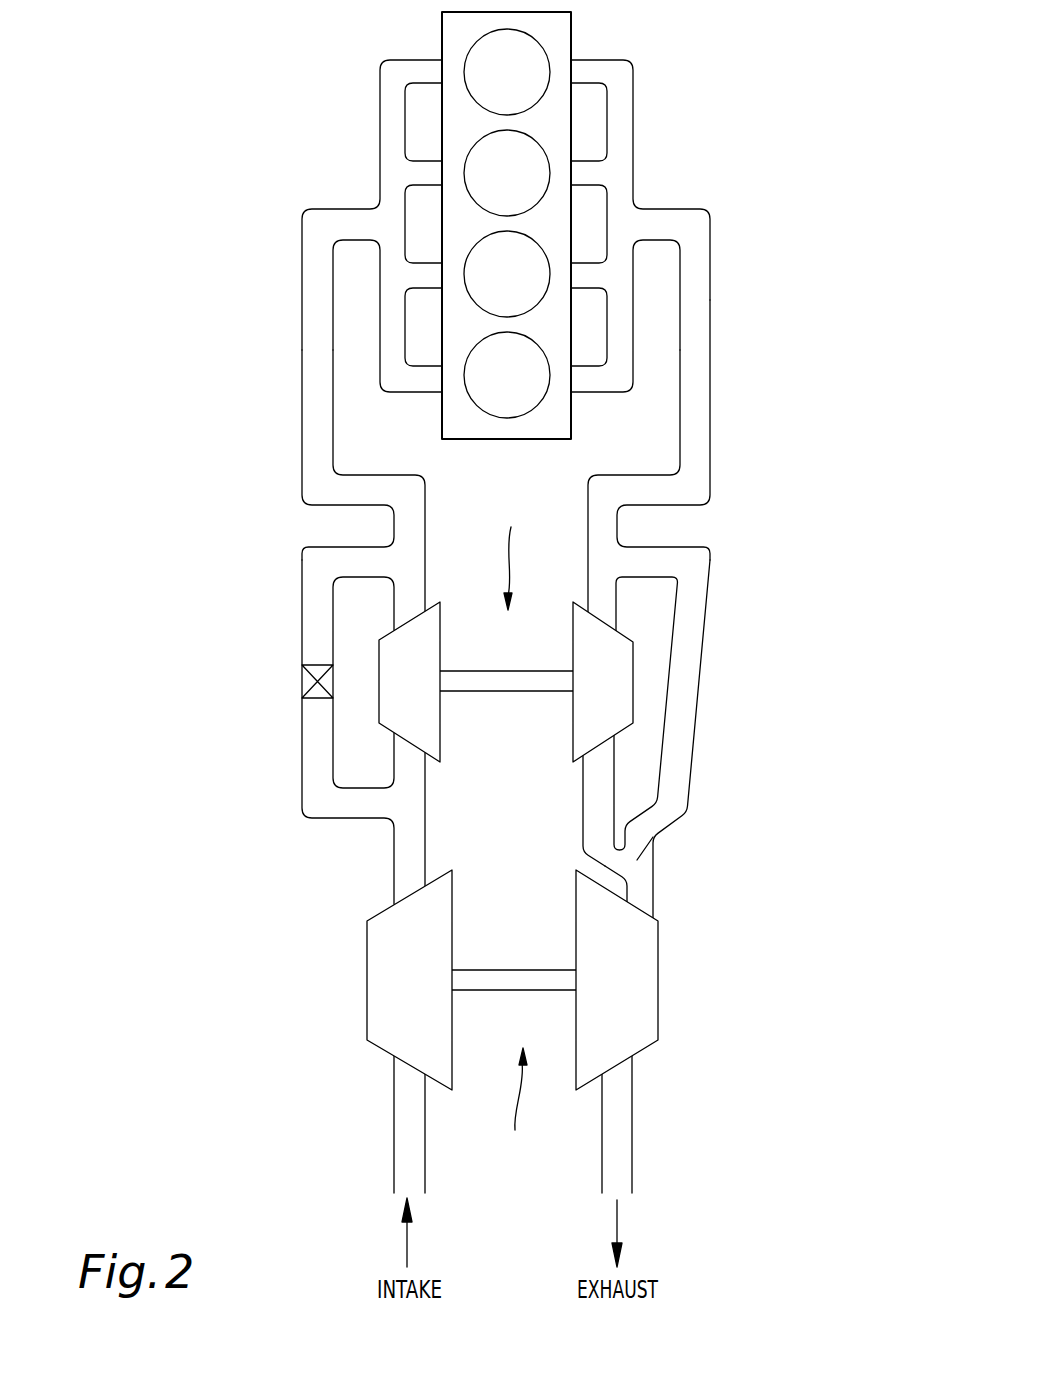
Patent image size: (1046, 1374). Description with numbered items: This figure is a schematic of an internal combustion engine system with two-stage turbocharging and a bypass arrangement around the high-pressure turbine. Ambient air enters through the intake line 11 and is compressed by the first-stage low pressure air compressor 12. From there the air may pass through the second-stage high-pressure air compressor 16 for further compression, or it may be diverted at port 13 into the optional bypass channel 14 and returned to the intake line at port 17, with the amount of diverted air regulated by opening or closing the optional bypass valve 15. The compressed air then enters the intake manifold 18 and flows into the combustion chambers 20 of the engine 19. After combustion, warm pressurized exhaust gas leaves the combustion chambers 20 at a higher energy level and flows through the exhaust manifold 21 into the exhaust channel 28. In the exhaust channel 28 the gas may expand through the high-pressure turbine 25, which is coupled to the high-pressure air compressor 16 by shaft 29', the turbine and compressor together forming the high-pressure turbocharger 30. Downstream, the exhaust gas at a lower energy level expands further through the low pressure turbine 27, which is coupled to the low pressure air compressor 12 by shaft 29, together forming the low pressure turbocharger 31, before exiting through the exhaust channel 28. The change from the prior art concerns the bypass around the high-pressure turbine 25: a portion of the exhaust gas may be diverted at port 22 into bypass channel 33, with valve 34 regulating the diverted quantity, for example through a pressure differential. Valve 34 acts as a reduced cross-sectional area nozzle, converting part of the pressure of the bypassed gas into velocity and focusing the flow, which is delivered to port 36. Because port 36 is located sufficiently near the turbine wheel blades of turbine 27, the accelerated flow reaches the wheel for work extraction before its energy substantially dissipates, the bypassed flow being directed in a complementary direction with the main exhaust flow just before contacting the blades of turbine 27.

The intake line 11 is at (400, 1122).
The first-stage low pressure air compressor 12 is at (380, 978).
The port 13 is at (392, 803).
The bypass channel 14 is at (312, 790).
The bypass valve 15 is at (305, 682).
The second-stage high-pressure air compressor 16 is at (422, 696).
The port 17 is at (393, 563).
The intake manifold 18 is at (388, 223).
The engine 19 is at (558, 27).
The combustion chambers 20 is at (520, 85).
The exhaust manifold 21 is at (623, 223).
The port 22 is at (623, 563).
The high-pressure turbine 25 is at (616, 696).
The low pressure turbine 27 is at (647, 990).
The exhaust channel 28 is at (695, 380).
The shaft 29 is at (514, 934).
The shaft 29' is at (506, 726).
The high-pressure turbocharger 30 is at (514, 555).
The low pressure turbocharger 31 is at (515, 1108).
The bypass channel 33 is at (688, 673).
The valve 34 is at (648, 857).
The port 36 is at (645, 862).